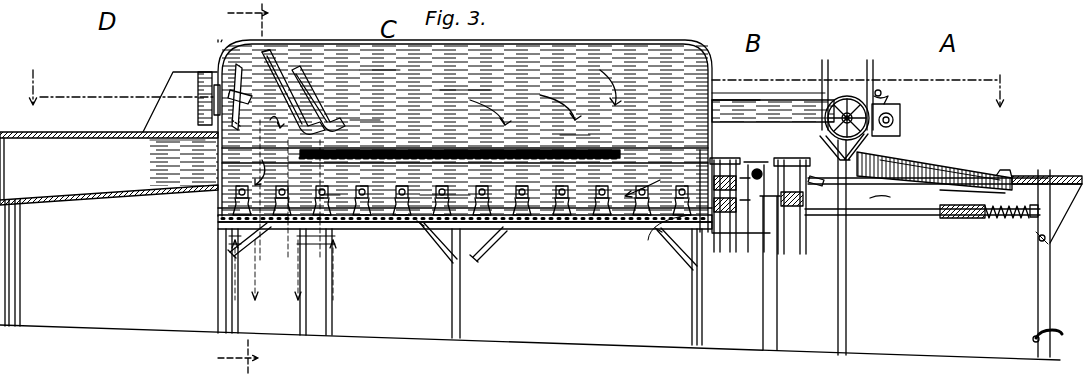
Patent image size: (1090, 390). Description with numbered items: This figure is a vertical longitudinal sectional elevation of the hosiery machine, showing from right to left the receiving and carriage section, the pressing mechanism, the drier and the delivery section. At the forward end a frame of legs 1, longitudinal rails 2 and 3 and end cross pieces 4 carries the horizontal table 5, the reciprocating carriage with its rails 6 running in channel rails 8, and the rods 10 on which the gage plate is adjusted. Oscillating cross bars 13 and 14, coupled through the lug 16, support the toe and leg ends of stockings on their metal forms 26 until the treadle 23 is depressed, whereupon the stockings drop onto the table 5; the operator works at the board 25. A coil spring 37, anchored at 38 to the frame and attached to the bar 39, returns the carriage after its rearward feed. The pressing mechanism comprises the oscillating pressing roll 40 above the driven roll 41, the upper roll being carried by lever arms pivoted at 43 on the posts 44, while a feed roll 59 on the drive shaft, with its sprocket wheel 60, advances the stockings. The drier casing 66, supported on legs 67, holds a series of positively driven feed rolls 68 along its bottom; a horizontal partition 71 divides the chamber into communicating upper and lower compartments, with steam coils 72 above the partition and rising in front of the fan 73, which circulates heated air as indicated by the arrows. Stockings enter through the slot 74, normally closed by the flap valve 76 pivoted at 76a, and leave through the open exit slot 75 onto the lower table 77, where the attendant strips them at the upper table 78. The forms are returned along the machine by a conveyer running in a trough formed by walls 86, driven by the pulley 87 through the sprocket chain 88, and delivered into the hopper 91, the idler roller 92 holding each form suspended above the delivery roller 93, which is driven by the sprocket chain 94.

The upright supports or legs 1 is at (776, 300).
The longitudinal horizontal rails 2 is at (920, 188).
The longitudinal horizontal rails 3 is at (924, 178).
The end rails or cross pieces 4 is at (1038, 240).
The horizontal table 5 is at (511, 137).
The carriage rails 6 is at (248, 18).
The channel rails 8 is at (882, 218).
The longitudinal rods 10 is at (975, 186).
The oscillating cross bar 13 is at (817, 187).
The oscillating cross bar 14 is at (1002, 174).
The vertically extending lug 16 is at (490, 197).
The treadle device 23 is at (1054, 332).
The horizontal board or table 25 is at (1032, 176).
The metal form 26 is at (104, 190).
The coil spring 37 is at (1003, 220).
The spring anchorage 38 is at (1050, 242).
The carriage bar 39 is at (966, 219).
The oscillating pressing roll 40 is at (737, 180).
The lower positively driven roll 41 is at (727, 216).
The lever pivot 43 is at (760, 170).
The posts or standards 44 is at (756, 232).
The transverse feed roll 59 is at (806, 220).
The sprocket wheel 60 is at (298, 176).
The casing 66 is at (613, 42).
The legs 67 is at (217, 305).
The feed rolls 68 is at (395, 186).
The horizontal partition 71 is at (436, 145).
The steam coils 72 is at (303, 70).
The fan 73 is at (222, 72).
The entrance slot opening 74 is at (680, 258).
The exit or discharge slot 75 is at (206, 190).
The flap valve 76 is at (690, 202).
The flap valve pivot 76a is at (712, 160).
The lower table 77 is at (66, 213).
The upper table 78 is at (78, 133).
The trough walls 86 is at (756, 110).
The pulley 87 is at (847, 97).
The sprocket chain 88 is at (824, 106).
The receiver or hopper 91 is at (948, 167).
The idler roller 92 is at (900, 118).
The delivery roller 93 is at (886, 95).
The sprocket chain 94 is at (895, 134).